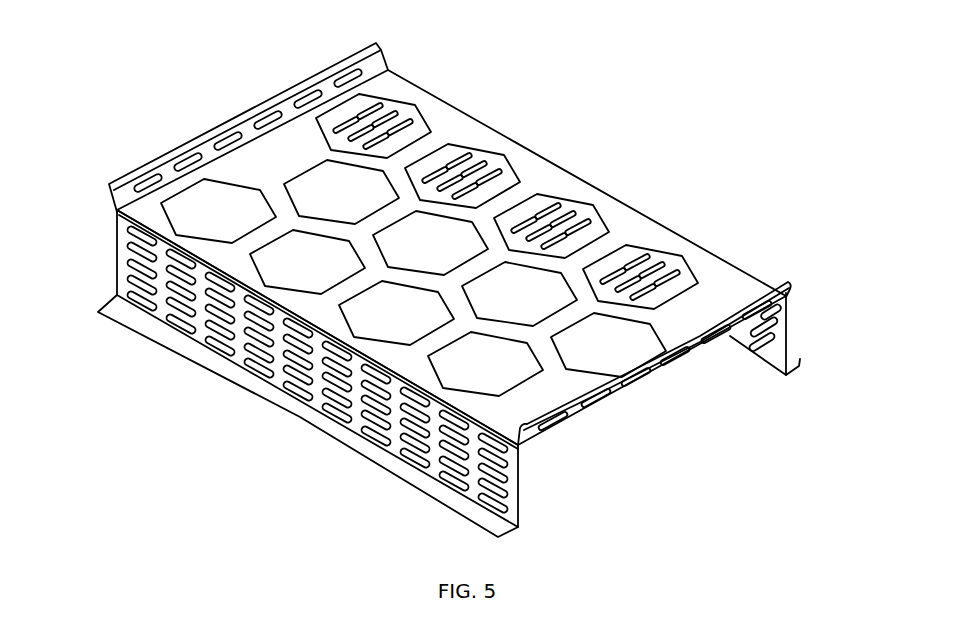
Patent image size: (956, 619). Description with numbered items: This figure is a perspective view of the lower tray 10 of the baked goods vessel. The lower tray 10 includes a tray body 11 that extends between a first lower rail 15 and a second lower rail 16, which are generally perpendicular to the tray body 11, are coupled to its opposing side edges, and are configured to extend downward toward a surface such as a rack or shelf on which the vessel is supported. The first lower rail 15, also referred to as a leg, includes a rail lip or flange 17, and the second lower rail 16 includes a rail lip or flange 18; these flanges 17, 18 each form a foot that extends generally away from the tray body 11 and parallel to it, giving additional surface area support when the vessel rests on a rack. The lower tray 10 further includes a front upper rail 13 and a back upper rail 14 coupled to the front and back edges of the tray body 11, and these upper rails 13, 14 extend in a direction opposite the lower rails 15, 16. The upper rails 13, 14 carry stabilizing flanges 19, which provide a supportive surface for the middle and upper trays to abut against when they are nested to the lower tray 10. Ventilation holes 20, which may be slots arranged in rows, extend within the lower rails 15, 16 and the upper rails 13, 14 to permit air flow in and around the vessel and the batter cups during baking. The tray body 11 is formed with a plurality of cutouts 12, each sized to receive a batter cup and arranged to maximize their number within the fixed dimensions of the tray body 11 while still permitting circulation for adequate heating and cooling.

The lower tray 10 is at (168, 66).
The tray body 11 is at (540, 180).
The cutouts 12 is at (528, 375).
The front upper rail 13 is at (128, 200).
The back upper rail 14 is at (523, 432).
The first lower rail 15 is at (785, 322).
The second lower rail 16 is at (127, 275).
The rail lip or flange 17 is at (800, 366).
The rail lip or flange 18 is at (225, 375).
The stabilizing flanges 19 is at (167, 160).
The ventilation holes 20 is at (365, 408).